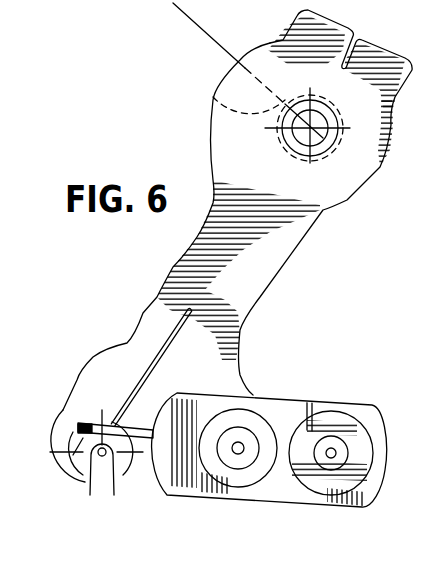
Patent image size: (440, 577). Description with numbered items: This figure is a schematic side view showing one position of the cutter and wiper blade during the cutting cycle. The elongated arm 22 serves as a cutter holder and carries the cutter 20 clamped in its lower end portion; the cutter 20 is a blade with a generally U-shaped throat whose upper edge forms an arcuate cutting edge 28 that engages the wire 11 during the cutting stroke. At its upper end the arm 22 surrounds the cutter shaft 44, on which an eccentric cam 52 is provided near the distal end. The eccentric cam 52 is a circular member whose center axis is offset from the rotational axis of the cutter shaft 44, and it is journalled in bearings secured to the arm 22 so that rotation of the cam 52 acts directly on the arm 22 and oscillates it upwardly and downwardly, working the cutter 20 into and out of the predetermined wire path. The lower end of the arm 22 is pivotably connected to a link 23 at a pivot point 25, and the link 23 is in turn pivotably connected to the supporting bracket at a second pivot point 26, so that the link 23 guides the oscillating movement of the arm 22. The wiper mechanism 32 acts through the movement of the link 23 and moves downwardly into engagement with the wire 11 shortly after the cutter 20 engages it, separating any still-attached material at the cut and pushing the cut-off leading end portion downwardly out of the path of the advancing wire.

The wire 11 is at (110, 490).
The cutter 20 is at (70, 470).
The elongated arm 22 is at (242, 287).
The link 23 is at (285, 497).
The pivot point 25 is at (238, 457).
The pivot point 26 is at (335, 453).
The cutting edge 28 is at (113, 428).
The wiper mechanism 32 is at (80, 424).
The cutter shaft 44 is at (297, 150).
The eccentric cam 52 is at (214, 97).